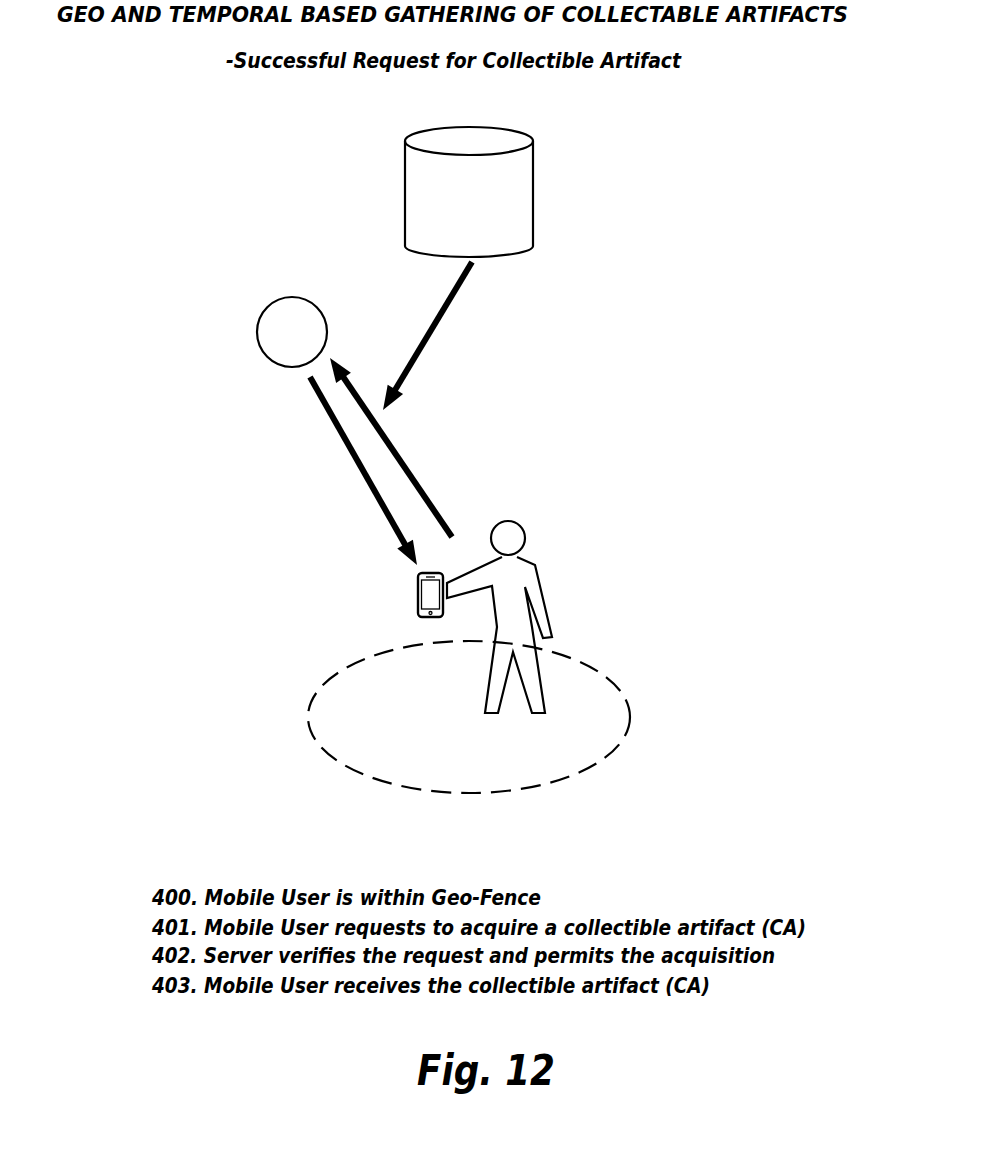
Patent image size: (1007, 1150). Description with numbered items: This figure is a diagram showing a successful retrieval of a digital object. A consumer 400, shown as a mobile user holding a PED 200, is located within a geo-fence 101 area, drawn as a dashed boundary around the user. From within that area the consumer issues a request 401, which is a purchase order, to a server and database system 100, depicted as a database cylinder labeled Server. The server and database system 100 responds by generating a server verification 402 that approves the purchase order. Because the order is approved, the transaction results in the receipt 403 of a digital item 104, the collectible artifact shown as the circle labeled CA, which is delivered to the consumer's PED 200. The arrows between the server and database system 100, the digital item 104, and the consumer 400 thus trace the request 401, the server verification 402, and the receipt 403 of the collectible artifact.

The server and database system 100 is at (533, 192).
The digital item 104 is at (257, 319).
The geo-fence 101 is at (623, 692).
The PED 200 is at (418, 597).
The consumer 400 is at (543, 592).
The request 401 is at (409, 450).
The server verification 402 is at (455, 321).
The receipt 403 is at (349, 482).